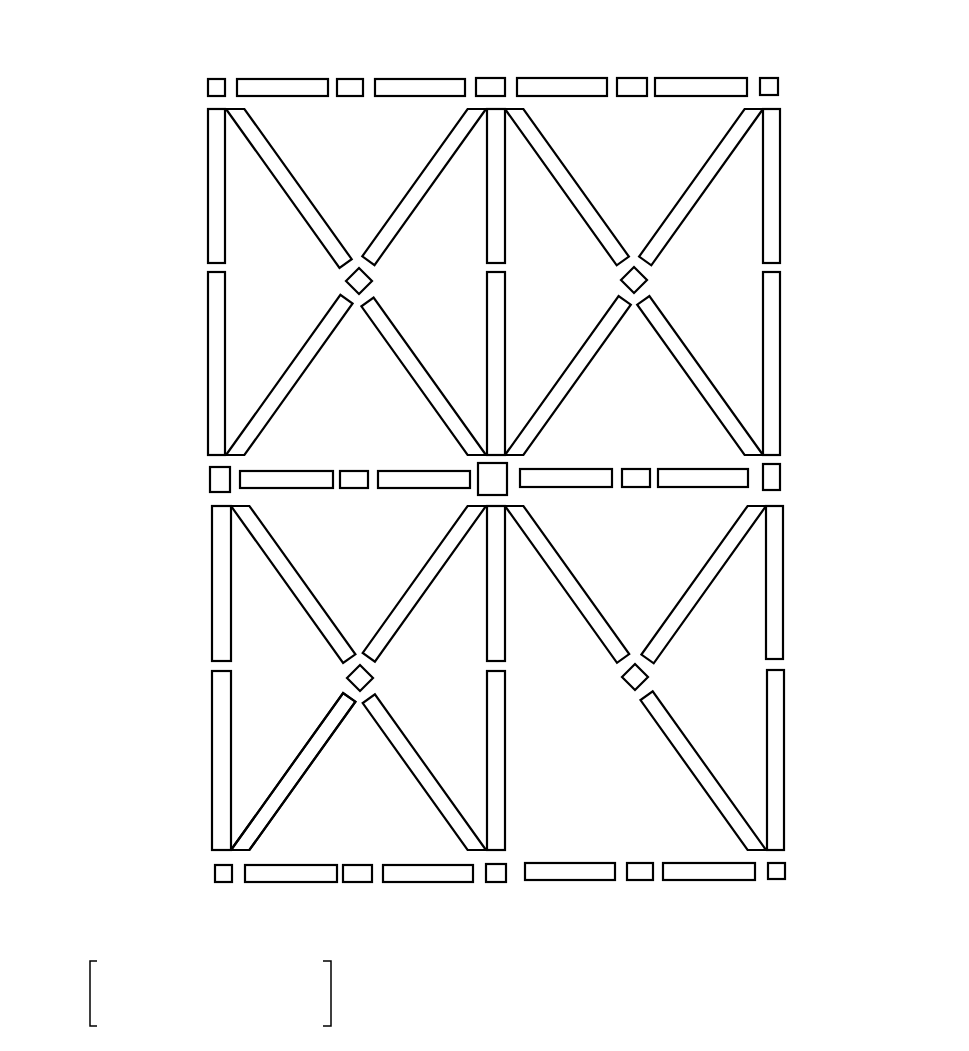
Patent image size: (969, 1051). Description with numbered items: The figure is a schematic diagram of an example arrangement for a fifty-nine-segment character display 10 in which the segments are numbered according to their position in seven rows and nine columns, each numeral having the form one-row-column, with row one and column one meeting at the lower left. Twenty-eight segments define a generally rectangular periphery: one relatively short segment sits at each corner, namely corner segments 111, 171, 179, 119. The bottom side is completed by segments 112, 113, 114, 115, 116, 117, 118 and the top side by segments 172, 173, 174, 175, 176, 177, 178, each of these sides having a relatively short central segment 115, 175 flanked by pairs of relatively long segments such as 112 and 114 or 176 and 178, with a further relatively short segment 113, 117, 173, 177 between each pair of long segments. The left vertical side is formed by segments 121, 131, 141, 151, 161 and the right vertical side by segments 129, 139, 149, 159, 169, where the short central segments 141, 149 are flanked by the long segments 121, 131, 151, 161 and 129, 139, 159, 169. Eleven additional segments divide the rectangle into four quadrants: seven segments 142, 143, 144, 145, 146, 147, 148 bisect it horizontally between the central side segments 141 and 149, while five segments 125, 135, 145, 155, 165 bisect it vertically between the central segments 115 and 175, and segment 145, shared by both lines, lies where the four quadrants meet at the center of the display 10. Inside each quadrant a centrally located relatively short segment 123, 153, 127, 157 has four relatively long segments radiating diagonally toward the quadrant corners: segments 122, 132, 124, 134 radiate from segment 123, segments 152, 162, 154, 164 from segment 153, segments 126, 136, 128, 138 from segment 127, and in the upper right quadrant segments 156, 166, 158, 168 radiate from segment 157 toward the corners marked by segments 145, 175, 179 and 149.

The segmented character display 10 is at (208, 22).
The corner segment 111 is at (215, 881).
The bottom side segment 112 is at (300, 863).
The bottom side segment 113 is at (357, 863).
The bottom side segment 114 is at (417, 863).
The bottom central segment 115 is at (508, 862).
The bottom side segment 116 is at (597, 862).
The bottom side segment 117 is at (647, 862).
The bottom side segment 118 is at (691, 862).
The corner segment 119 is at (785, 870).
The left side segment 121 is at (212, 805).
The diagonal segment 122 is at (294, 779).
The quadrant central segment 123 is at (348, 680).
The diagonal segment 124 is at (399, 744).
The vertical bisecting segment 125 is at (487, 728).
The diagonal segment 126 is at (597, 750).
The quadrant central segment 127 is at (648, 680).
The diagonal segment 128 is at (691, 736).
The right side segment 129 is at (785, 745).
The left side segment 131 is at (212, 641).
The diagonal segment 132 is at (303, 614).
The diagonal segment 134 is at (403, 599).
The vertical bisecting segment 135 is at (487, 620).
The diagonal segment 136 is at (581, 613).
The diagonal segment 138 is at (687, 599).
The right side segment 139 is at (783, 601).
The left central segment 141 is at (210, 469).
The horizontal bisecting segment 142 is at (277, 489).
The horizontal bisecting segment 143 is at (357, 470).
The horizontal bisecting segment 144 is at (403, 489).
The central segment 145 is at (508, 466).
The horizontal bisecting segment 146 is at (582, 488).
The horizontal bisecting segment 147 is at (636, 468).
The horizontal bisecting segment 148 is at (677, 488).
The right central segment 149 is at (780, 477).
The left side segment 151 is at (208, 315).
The diagonal segment 152 is at (296, 379).
The quadrant central segment 153 is at (346, 283).
The diagonal segment 154 is at (428, 400).
The vertical bisecting segment 155 is at (487, 322).
The diagonal segment 156 is at (591, 332).
The quadrant central segment 157 is at (647, 280).
The diagonal segment 158 is at (689, 381).
The right side segment 159 is at (780, 355).
The left side segment 161 is at (208, 236).
The diagonal segment 162 is at (315, 237).
The diagonal segment 164 is at (406, 197).
The vertical bisecting segment 165 is at (487, 237).
The diagonal segment 166 is at (589, 231).
The diagonal segment 168 is at (696, 177).
The right side segment 169 is at (780, 193).
The corner segment 171 is at (212, 78).
The top side segment 172 is at (283, 78).
The top side segment 173 is at (337, 97).
The top side segment 174 is at (395, 78).
The top central segment 175 is at (495, 77).
The top side segment 176 is at (585, 77).
The top side segment 177 is at (622, 96).
The top side segment 178 is at (693, 77).
The corner segment 179 is at (770, 77).